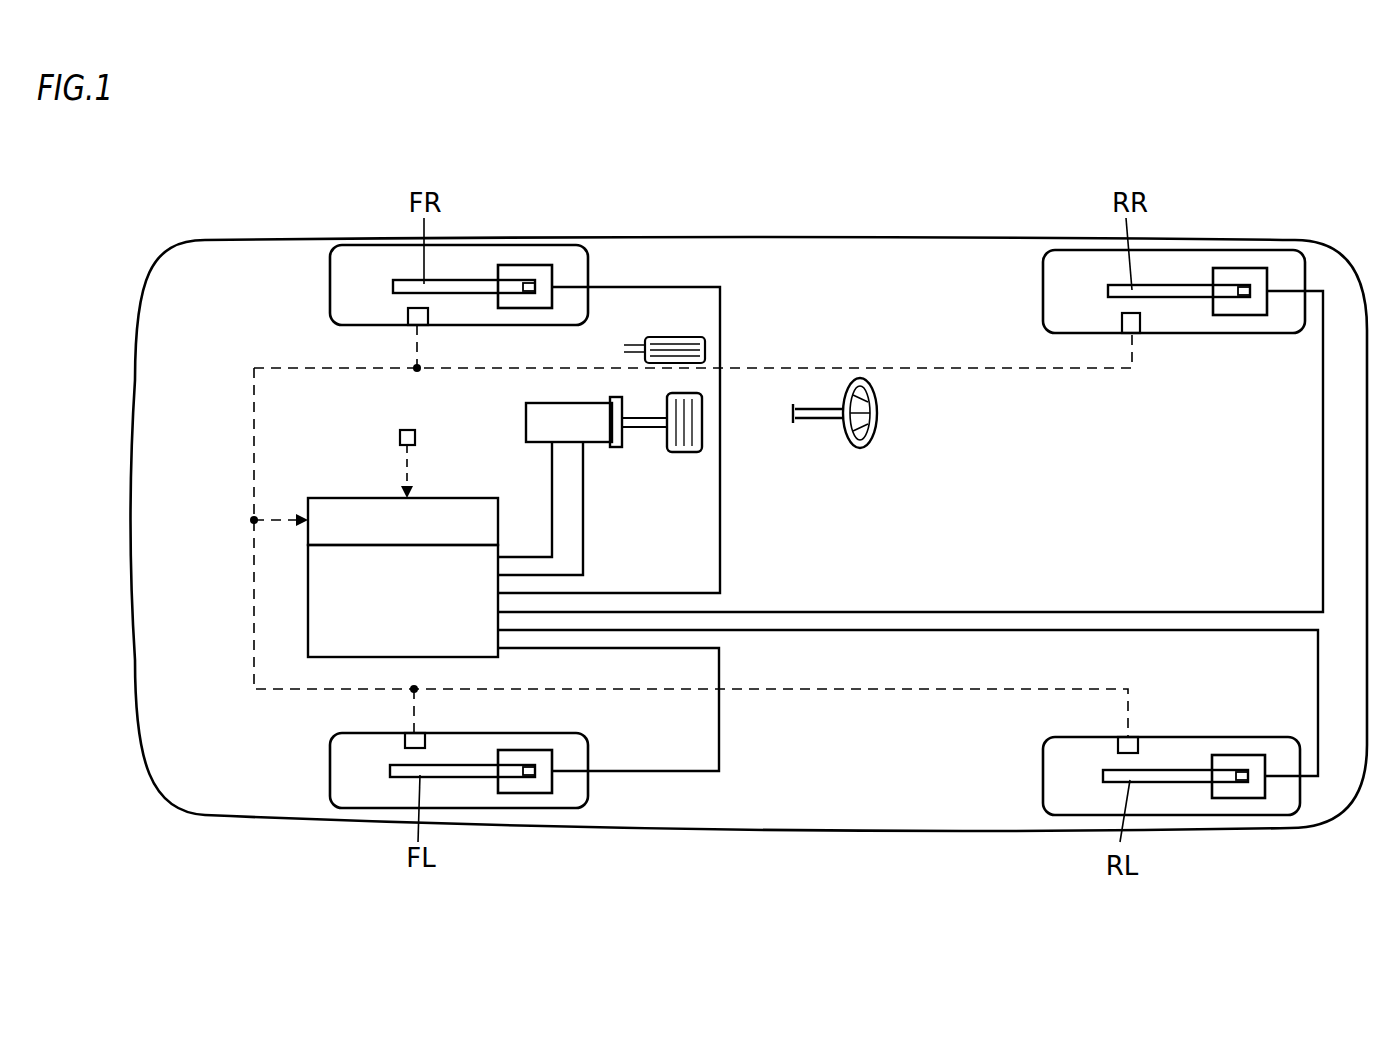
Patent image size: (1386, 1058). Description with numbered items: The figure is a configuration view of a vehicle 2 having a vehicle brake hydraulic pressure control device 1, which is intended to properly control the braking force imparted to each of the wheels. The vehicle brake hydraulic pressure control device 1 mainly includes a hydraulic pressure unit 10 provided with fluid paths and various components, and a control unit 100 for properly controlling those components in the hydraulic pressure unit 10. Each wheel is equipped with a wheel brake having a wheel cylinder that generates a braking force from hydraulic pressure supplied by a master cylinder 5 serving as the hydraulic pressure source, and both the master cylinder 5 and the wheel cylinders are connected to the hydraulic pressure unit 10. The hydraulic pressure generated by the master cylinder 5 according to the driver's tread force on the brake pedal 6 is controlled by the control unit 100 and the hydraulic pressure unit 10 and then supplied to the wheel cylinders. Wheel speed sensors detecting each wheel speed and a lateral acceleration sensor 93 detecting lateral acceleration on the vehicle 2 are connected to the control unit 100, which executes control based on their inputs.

The vehicle brake hydraulic pressure control device 1 is at (346, 561).
The vehicle 2 is at (874, 219).
The master cylinder 5 is at (591, 443).
The brake pedal 6 is at (703, 432).
The hydraulic pressure unit 10 is at (320, 612).
The lateral acceleration sensor 93 is at (408, 428).
The control unit 100 is at (308, 537).